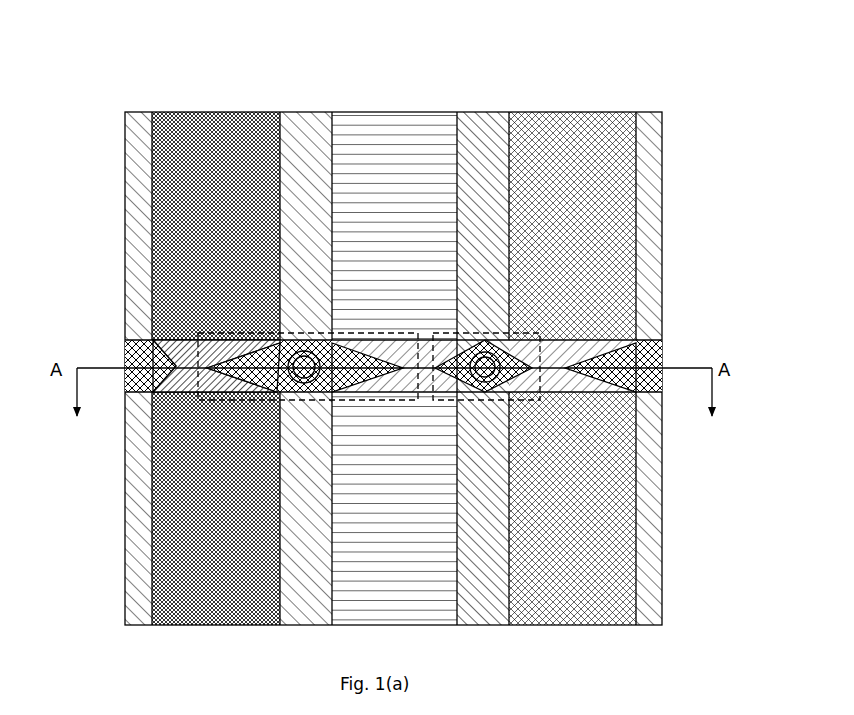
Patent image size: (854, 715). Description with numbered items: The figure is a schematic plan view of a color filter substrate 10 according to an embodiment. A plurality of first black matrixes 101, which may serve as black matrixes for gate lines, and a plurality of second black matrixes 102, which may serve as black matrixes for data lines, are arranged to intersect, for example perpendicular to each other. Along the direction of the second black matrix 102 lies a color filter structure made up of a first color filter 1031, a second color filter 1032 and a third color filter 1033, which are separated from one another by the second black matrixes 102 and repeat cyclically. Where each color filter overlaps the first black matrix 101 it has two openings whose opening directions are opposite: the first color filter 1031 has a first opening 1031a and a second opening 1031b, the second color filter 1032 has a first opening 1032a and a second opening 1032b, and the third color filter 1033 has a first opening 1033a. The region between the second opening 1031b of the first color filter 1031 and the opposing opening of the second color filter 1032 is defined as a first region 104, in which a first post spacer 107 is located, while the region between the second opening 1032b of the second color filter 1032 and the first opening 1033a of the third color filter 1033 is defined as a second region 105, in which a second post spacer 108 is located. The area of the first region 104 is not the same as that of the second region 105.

The color filter substrate 10 is at (687, 66).
The first color filter 1031 is at (192, 332).
The second color filter 1032 is at (373, 332).
The second black matrix 102 is at (502, 332).
The third color filter 1033 is at (577, 332).
The first opening of second color filter 1032a is at (179, 237).
The first post spacer 107 is at (212, 272).
The first region 104 is at (220, 311).
The first opening of first color filter 1031a is at (102, 330).
The second opening of first color filter 1031b is at (240, 374).
The second opening of second color filter 1032b is at (611, 243).
The second post spacer 108 is at (600, 271).
The second region 105 is at (599, 306).
The first black matrix 101 is at (445, 334).
The first opening of third color filter 1033a is at (527, 378).